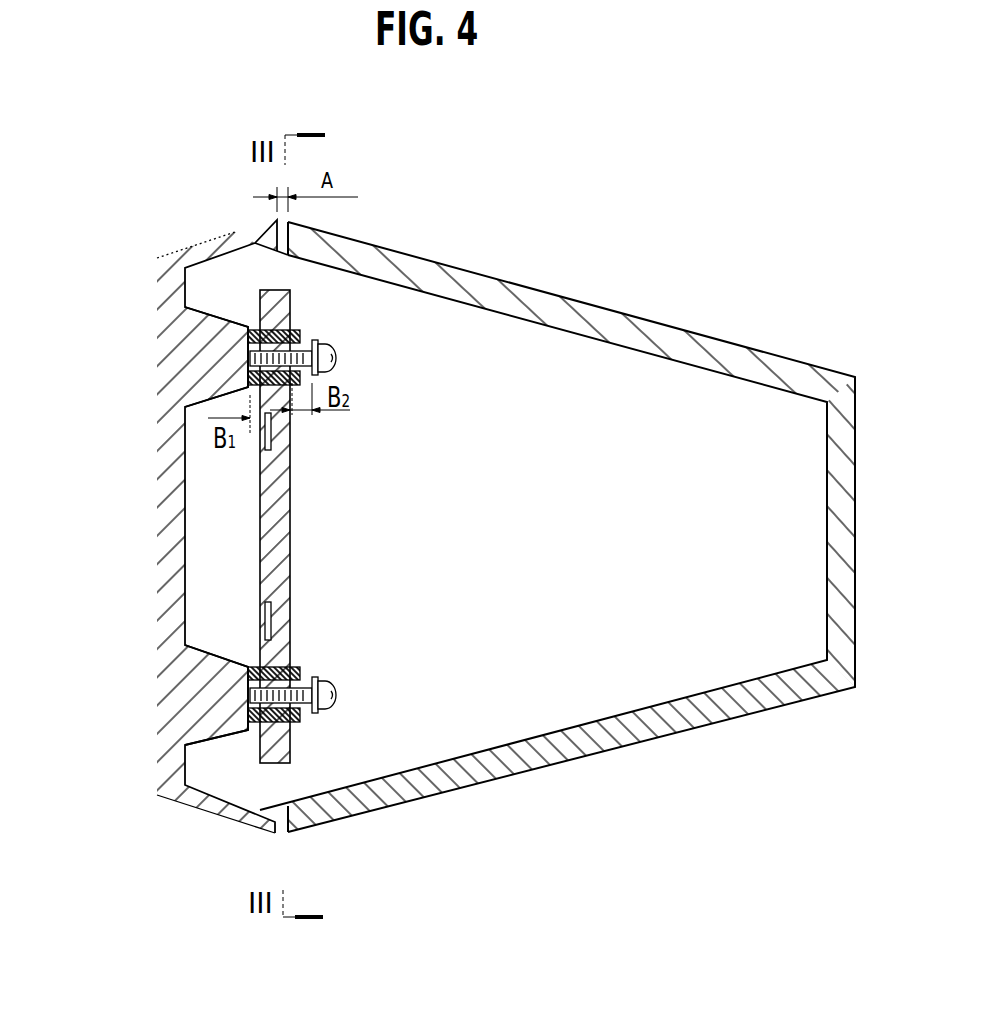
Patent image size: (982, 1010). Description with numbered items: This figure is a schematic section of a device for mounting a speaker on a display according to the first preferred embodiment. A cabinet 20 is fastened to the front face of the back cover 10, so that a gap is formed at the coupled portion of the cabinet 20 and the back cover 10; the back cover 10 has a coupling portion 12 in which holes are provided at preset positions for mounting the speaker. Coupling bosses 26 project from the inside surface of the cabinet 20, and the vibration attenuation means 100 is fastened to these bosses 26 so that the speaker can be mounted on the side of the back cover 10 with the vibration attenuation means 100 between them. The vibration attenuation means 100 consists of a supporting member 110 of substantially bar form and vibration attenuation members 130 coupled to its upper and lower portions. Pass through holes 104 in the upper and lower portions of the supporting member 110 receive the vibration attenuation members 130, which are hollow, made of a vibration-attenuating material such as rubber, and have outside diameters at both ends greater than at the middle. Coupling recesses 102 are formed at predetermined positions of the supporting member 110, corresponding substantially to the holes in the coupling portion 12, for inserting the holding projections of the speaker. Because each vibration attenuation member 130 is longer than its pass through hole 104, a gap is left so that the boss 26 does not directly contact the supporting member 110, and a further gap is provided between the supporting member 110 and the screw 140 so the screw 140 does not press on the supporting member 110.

The back cover 10 is at (574, 308).
The coupling portion 12 is at (284, 828).
The cabinet 20 is at (173, 292).
The coupling boss 26 is at (208, 368).
The vibration attenuation means 100 is at (274, 525).
The supporting member 110 is at (267, 528).
The coupling recess 102 is at (268, 620).
The pass through hole 104 is at (302, 720).
The vibration attenuation member 130 is at (302, 333).
The screw 140 is at (335, 360).